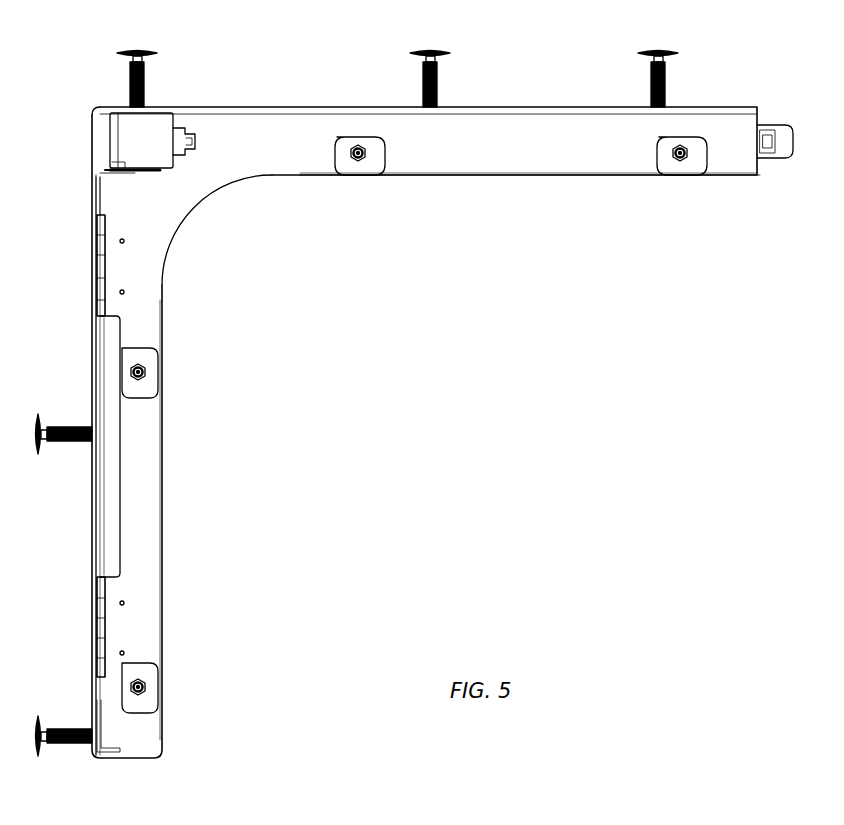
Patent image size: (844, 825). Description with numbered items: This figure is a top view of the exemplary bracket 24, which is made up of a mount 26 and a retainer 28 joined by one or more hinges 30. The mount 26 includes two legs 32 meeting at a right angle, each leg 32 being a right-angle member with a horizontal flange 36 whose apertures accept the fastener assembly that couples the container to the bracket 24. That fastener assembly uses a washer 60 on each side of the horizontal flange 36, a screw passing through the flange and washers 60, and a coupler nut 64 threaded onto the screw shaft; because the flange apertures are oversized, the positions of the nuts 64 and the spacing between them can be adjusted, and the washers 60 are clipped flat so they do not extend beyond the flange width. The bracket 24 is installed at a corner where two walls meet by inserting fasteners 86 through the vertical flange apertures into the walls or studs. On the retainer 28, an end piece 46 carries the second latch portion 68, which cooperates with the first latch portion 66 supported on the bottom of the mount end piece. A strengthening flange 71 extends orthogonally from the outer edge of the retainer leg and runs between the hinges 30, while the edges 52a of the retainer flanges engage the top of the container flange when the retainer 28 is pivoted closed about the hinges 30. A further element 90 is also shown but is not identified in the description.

The bracket 24 is at (462, 440).
The mount 26 is at (497, 150).
The retainer 28 is at (88, 370).
The hinge 30 is at (105, 248).
The leg 32 is at (553, 160).
The horizontal flange 36 is at (445, 160).
The end piece 46 is at (138, 145).
The edge of flange 52a is at (118, 172).
The washer 60 is at (364, 168).
The coupler nut 64 is at (355, 159).
The first latch portion 66 is at (777, 160).
The second latch portion 68 is at (195, 145).
The strengthening flange 71 is at (108, 515).
The fastener 86 is at (132, 85).
The channel wall 90 is at (88, 544).